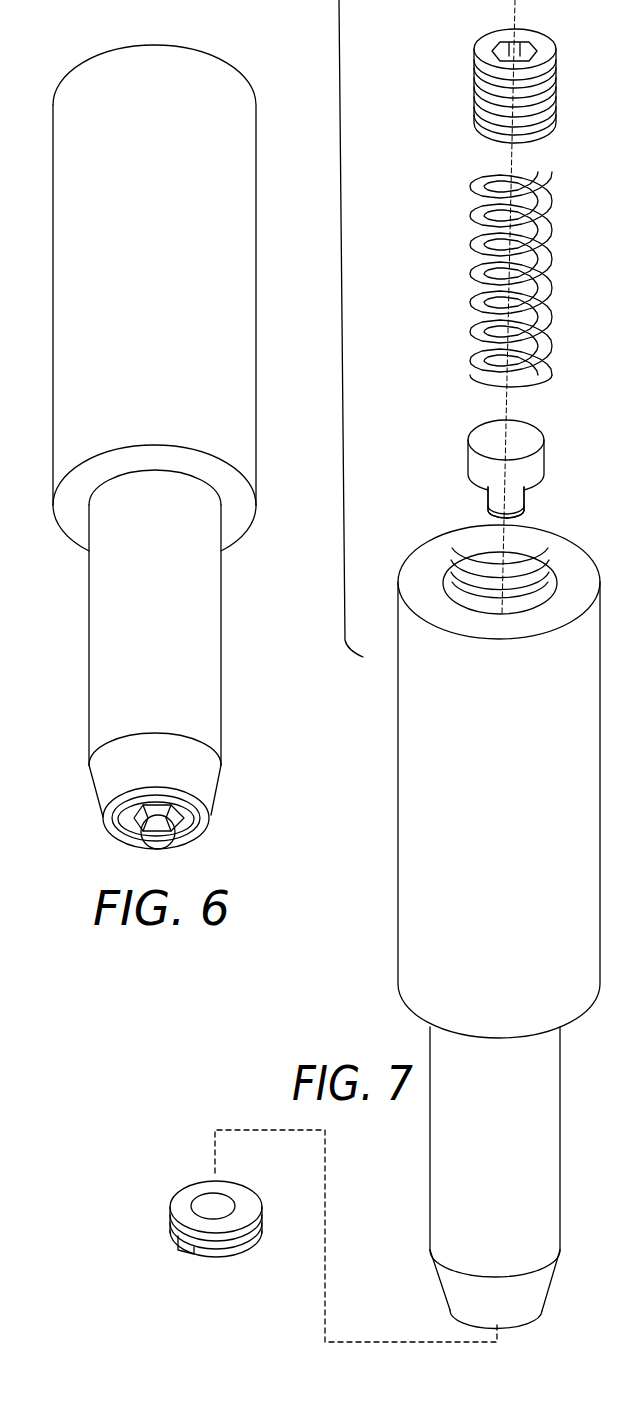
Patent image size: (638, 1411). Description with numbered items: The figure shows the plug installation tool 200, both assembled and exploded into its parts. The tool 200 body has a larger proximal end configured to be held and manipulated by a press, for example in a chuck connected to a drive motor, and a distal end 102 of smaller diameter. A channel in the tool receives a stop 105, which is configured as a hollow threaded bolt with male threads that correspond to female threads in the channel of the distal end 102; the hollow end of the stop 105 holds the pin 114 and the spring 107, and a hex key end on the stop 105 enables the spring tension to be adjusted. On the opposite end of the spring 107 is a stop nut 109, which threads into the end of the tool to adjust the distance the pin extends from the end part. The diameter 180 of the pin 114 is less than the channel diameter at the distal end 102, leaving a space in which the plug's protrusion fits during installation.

In FIG. 6, the tool 200 is at (128, 40).
In FIG. 7, the stop 105 is at (474, 91).
In FIG. 7, the spring 107 is at (465, 300).
In FIG. 7, the pin 114 is at (488, 490).
In FIG. 7, the diameter of the pin 180 is at (617, 490).
In FIG. 7, the distal end 102 is at (444, 1196).
In FIG. 7, the stop nut 109 is at (263, 1207).